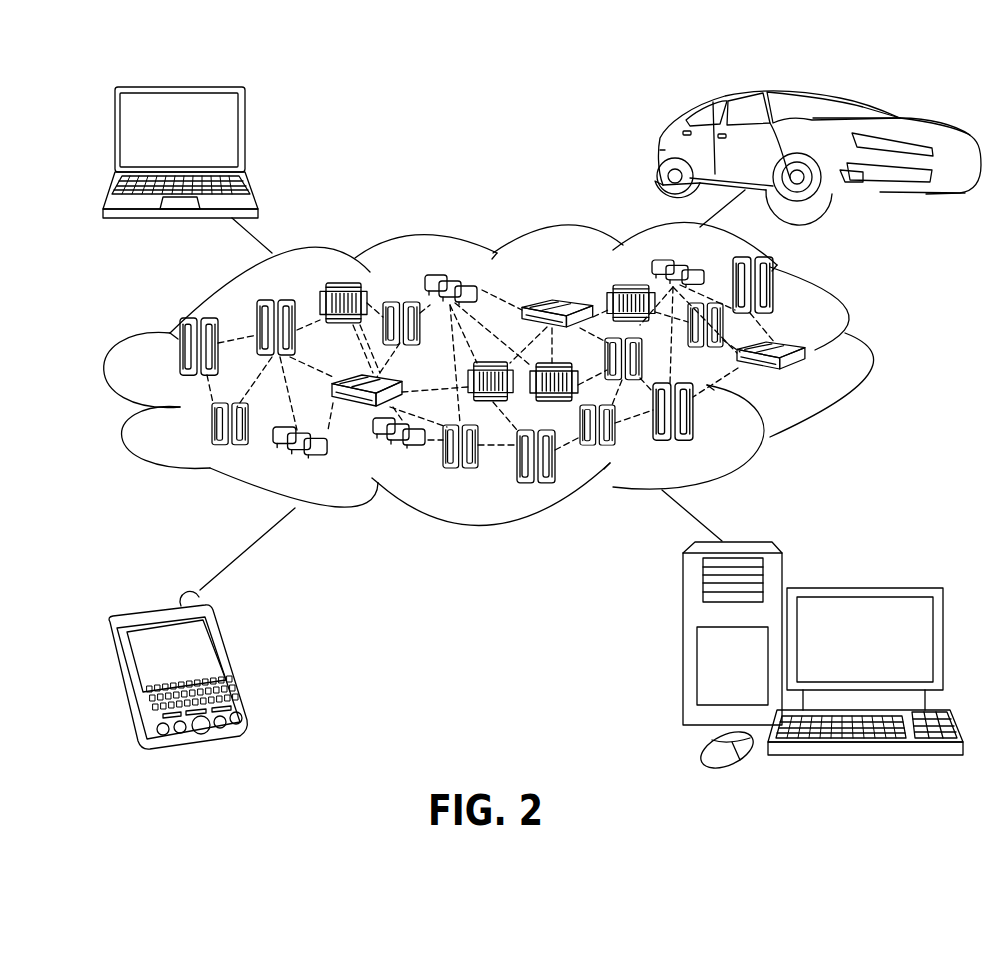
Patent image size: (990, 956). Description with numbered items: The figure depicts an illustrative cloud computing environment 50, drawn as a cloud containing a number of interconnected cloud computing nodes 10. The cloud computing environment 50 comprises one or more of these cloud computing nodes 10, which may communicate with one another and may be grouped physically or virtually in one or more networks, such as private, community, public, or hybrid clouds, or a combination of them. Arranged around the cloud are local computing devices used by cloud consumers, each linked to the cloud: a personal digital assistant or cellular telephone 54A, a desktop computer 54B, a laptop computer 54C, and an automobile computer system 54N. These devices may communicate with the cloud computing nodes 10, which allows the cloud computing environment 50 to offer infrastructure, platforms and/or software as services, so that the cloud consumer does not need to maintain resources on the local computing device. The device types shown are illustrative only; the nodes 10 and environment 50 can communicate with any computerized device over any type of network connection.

The cloud computing environment 50 is at (865, 353).
The cloud computing node 10 is at (542, 370).
The personal digital assistant or cellular telephone 54A is at (237, 660).
The desktop computer 54B is at (860, 586).
The laptop computer 54C is at (245, 135).
The automobile computer system 54N is at (660, 150).